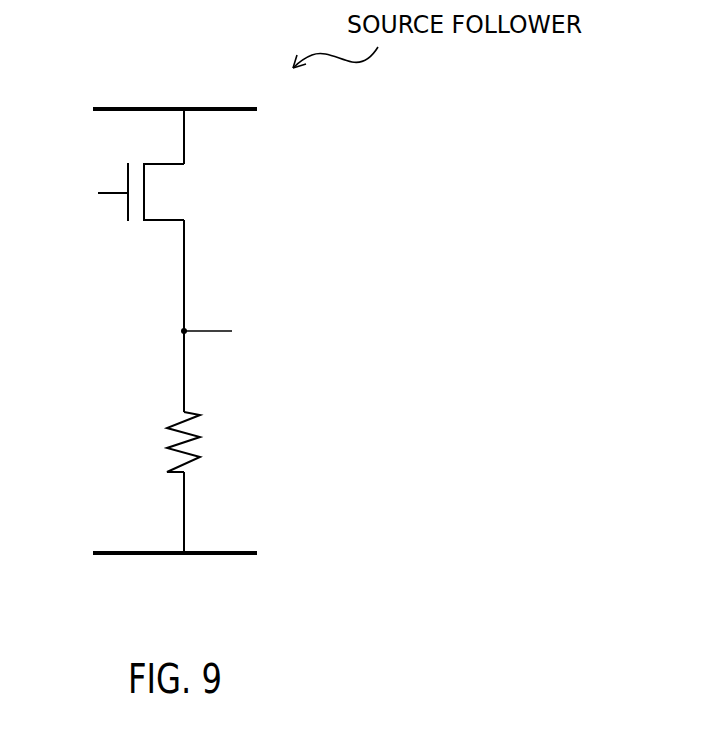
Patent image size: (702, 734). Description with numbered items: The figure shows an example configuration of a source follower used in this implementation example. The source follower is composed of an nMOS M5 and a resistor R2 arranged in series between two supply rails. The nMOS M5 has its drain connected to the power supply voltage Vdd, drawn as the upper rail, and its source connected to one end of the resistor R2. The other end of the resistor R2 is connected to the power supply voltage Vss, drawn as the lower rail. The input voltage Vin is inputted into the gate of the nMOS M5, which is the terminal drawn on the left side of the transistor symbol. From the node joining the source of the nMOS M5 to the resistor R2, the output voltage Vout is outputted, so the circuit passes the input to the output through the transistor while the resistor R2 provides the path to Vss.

The nMOS M5 is at (185, 190).
The resistor R2 is at (198, 443).
The power supply voltage Vdd is at (145, 113).
The power supply voltage Vss is at (146, 557).
The input voltage Vin is at (88, 198).
The output voltage Vout is at (238, 334).